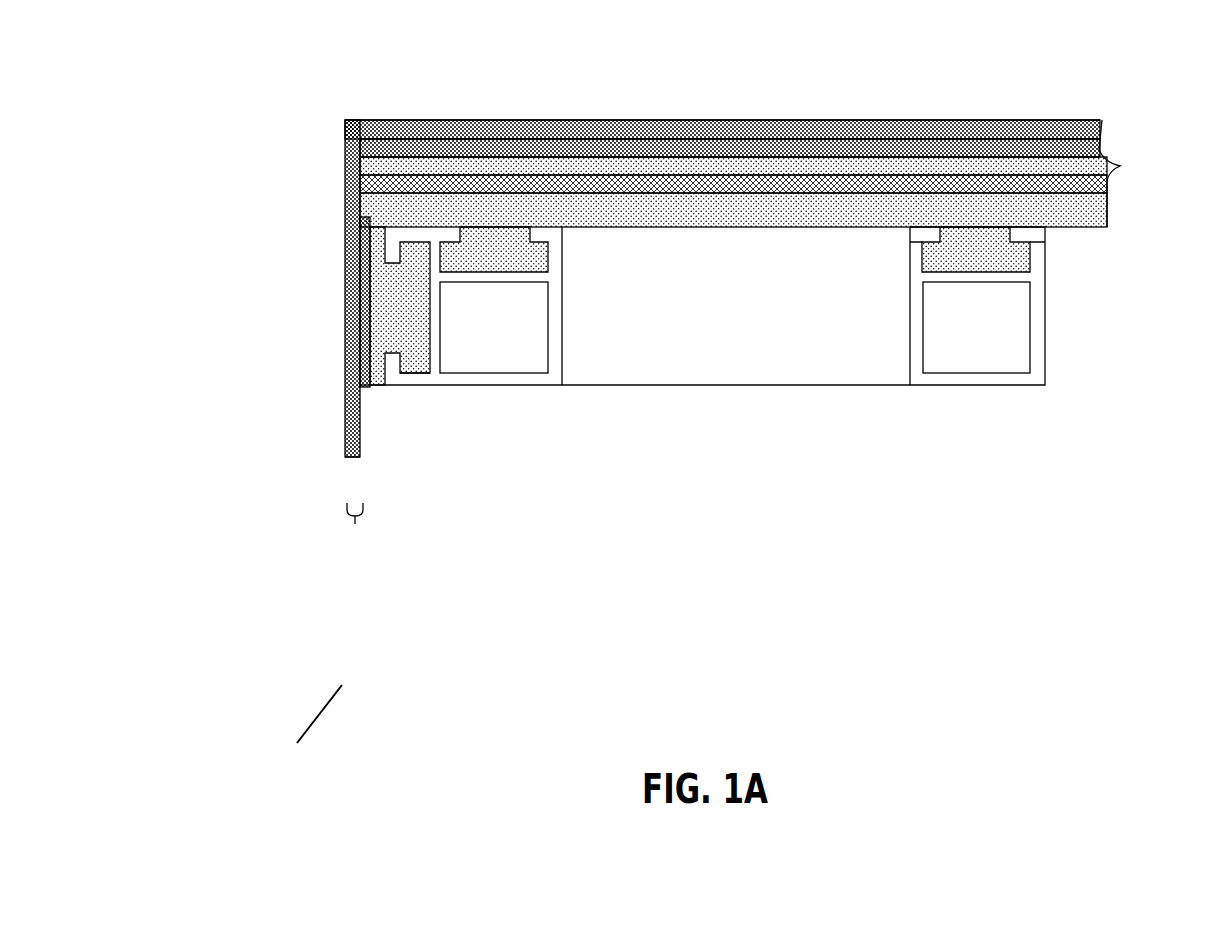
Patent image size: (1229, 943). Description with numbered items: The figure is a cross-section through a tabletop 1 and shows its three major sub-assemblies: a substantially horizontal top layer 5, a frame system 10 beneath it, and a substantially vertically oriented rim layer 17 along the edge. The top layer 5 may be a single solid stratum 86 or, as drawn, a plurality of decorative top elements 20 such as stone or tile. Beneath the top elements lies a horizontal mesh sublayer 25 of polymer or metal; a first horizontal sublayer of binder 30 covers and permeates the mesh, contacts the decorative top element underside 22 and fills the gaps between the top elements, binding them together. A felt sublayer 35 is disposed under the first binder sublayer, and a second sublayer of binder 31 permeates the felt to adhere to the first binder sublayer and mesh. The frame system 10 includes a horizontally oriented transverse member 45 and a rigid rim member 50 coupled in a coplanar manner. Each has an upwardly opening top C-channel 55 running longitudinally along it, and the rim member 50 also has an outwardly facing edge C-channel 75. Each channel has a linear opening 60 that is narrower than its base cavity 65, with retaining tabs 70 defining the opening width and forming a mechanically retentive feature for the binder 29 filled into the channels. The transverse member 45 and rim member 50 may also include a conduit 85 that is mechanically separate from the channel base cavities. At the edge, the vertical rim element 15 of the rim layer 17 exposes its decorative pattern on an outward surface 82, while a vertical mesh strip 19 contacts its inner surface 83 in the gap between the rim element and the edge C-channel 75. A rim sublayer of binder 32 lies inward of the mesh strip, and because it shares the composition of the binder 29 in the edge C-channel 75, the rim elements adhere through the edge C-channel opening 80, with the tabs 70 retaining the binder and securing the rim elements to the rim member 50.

The tabletop 1 is at (305, 727).
The top layer 5 is at (734, 130).
The frame system 10 is at (790, 337).
The vertical rim element 15 is at (345, 188).
The rim layer 17 is at (361, 532).
The vertical mesh strip 19 is at (370, 388).
The decorative top element 20 is at (565, 120).
The decorative top element underside 22 is at (1147, 223).
The horizontal mesh sublayer 25 is at (642, 132).
The binder 29 is at (667, 207).
The first horizontal sublayer of binder 30 is at (475, 122).
The second sublayer of binder 31 is at (548, 225).
The rim sublayer of binder 32 is at (350, 350).
The felt sublayer 35 is at (805, 185).
The transverse member 45 is at (970, 380).
The rim member 50 is at (503, 378).
The top C-channel 55 is at (552, 262).
The opening 60 is at (980, 233).
The base cavity 65 is at (942, 242).
The retaining tab 70 is at (1022, 235).
The edge C-channel 75 is at (422, 375).
The edge C-channel opening 80 is at (394, 309).
The outward surface 82 is at (345, 242).
The inner surface 83 is at (361, 452).
The conduit 85 is at (495, 328).
The solid stratum 86 is at (687, 129).